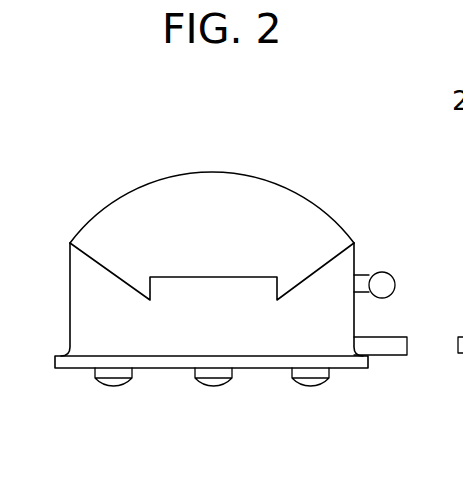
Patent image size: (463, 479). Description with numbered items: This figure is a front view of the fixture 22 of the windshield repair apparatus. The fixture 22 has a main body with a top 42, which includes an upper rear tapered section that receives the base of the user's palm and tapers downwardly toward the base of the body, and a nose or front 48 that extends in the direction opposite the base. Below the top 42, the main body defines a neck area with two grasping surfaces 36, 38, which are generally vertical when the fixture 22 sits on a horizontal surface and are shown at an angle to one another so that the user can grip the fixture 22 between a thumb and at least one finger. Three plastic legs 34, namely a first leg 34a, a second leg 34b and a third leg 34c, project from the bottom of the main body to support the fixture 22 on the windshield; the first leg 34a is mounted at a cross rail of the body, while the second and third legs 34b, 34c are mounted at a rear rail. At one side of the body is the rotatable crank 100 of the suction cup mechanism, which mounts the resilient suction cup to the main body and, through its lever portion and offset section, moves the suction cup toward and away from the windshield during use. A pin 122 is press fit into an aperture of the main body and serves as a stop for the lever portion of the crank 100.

The fixture 22 is at (235, 277).
The top 42 is at (245, 175).
The nose or front 48 is at (207, 288).
The grasping surface 38 is at (87, 303).
The grasping surface 36 is at (330, 323).
The rotatable crank 100 is at (382, 271).
The pin 122 is at (393, 355).
The plastic legs 34 is at (212, 413).
The first leg 34a is at (215, 387).
The second leg 34b is at (110, 387).
The third leg 34c is at (317, 387).